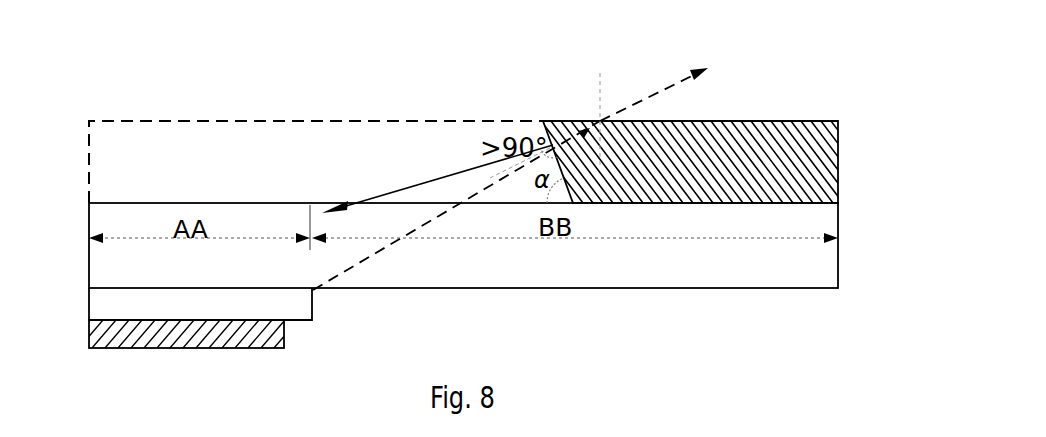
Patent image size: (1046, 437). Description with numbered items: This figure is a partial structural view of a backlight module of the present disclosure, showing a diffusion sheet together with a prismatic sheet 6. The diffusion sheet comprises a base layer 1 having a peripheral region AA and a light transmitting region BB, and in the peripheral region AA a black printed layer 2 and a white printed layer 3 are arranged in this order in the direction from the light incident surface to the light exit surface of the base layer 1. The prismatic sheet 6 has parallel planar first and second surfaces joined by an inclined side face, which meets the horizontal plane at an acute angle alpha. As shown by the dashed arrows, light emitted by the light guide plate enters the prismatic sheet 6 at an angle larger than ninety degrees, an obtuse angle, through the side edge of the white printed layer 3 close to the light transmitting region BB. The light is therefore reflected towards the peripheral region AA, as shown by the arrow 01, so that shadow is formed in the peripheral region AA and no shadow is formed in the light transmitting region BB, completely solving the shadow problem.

The base layer 1 is at (775, 259).
The black printed layer 2 is at (110, 333).
The white printed layer 3 is at (113, 303).
The prismatic sheet 6 is at (780, 165).
The arrow 01 is at (342, 202).